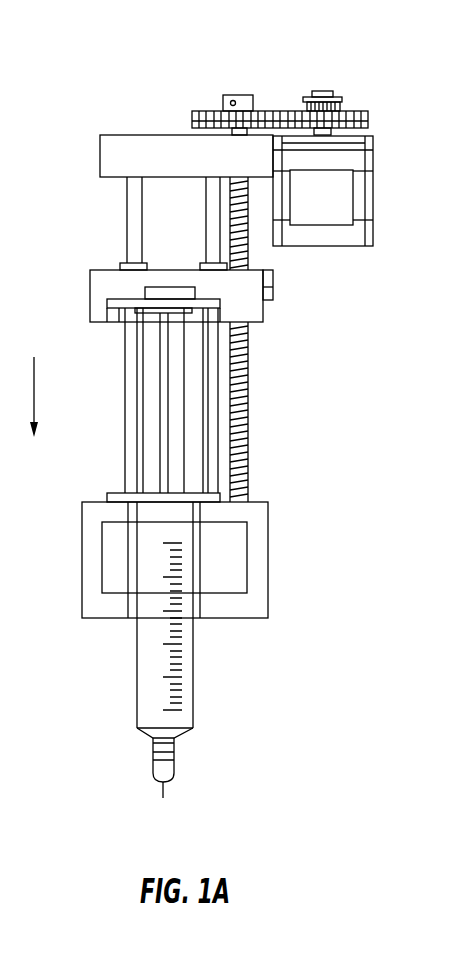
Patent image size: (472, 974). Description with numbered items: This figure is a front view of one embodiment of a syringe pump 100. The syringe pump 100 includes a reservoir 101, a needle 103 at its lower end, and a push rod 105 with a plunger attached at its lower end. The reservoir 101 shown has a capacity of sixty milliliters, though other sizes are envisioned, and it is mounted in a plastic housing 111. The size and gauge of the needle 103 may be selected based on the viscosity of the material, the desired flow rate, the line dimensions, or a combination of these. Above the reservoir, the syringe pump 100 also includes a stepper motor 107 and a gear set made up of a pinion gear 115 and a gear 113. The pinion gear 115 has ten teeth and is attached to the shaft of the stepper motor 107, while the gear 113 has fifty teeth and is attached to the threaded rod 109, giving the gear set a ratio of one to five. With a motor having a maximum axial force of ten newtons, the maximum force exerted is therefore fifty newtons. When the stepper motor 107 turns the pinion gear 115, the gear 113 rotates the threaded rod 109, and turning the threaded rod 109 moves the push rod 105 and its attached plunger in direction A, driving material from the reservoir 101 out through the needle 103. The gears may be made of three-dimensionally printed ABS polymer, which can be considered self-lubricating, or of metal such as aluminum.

The syringe pump 100 is at (119, 46).
The reservoir 101 is at (232, 672).
The needle 103 is at (163, 790).
The push rod 105 is at (133, 444).
The stepper motor 107 is at (340, 198).
The threaded rod 109 is at (242, 430).
The plastic housing 111 is at (258, 563).
The gear 113 is at (262, 112).
The pinion gear 115 is at (347, 111).